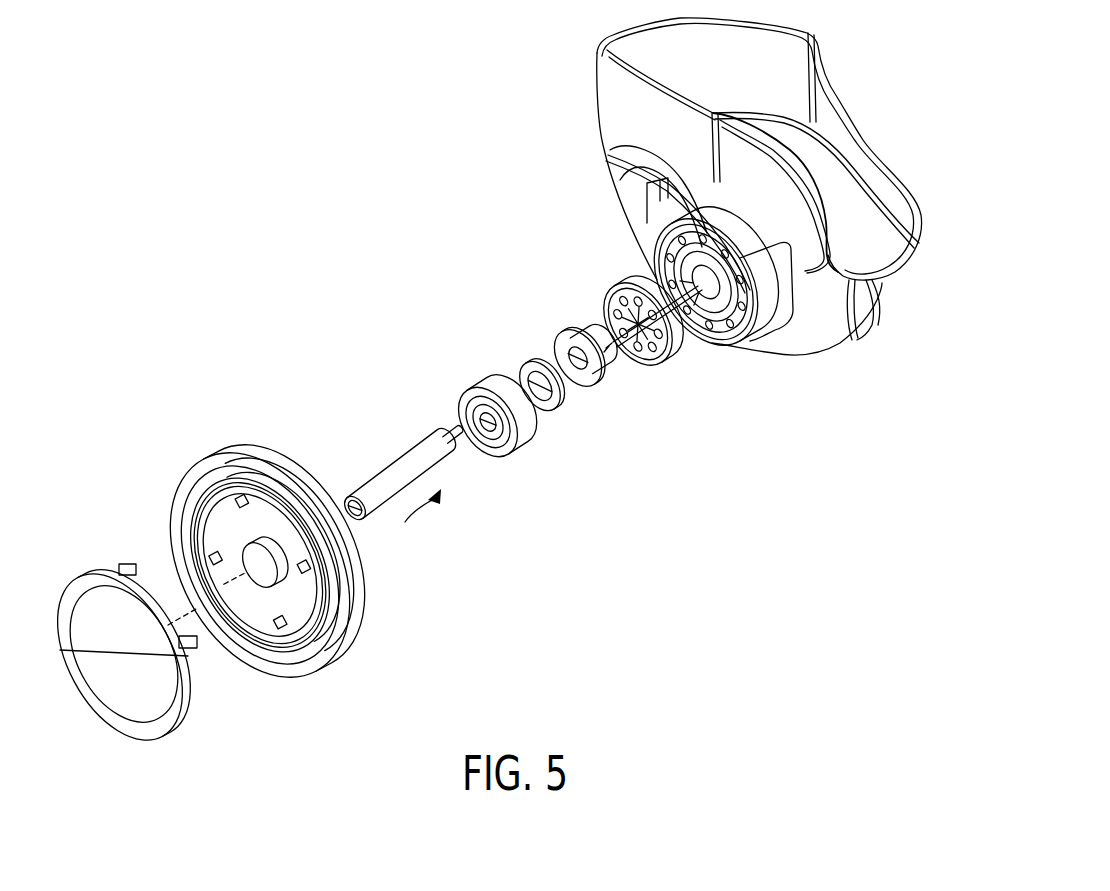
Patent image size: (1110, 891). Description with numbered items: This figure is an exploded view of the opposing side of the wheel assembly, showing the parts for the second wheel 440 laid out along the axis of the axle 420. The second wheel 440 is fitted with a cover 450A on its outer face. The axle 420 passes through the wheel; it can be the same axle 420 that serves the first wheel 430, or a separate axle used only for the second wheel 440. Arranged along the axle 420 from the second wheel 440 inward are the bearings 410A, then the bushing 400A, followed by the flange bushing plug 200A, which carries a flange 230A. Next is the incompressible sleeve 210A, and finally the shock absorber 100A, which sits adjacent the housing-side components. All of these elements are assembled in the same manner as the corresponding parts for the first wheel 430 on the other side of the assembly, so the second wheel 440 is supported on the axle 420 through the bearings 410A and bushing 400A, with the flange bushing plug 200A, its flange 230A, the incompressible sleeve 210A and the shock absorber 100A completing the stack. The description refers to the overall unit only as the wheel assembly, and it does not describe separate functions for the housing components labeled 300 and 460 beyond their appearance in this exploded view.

The shock absorber 100A is at (595, 268).
The flange bushing plug 200A is at (545, 300).
The incompressible sleeve 210A is at (637, 390).
The flange 230A is at (604, 428).
The drive unit housing assembly 300 is at (764, 385).
The bushing 400A is at (533, 370).
The bearings 410A is at (474, 391).
The axle 420 is at (394, 470).
The first wheel 430 is at (890, 330).
The second wheel 440 is at (350, 650).
The cover 450A is at (93, 570).
The housing cover 460 is at (565, 52).